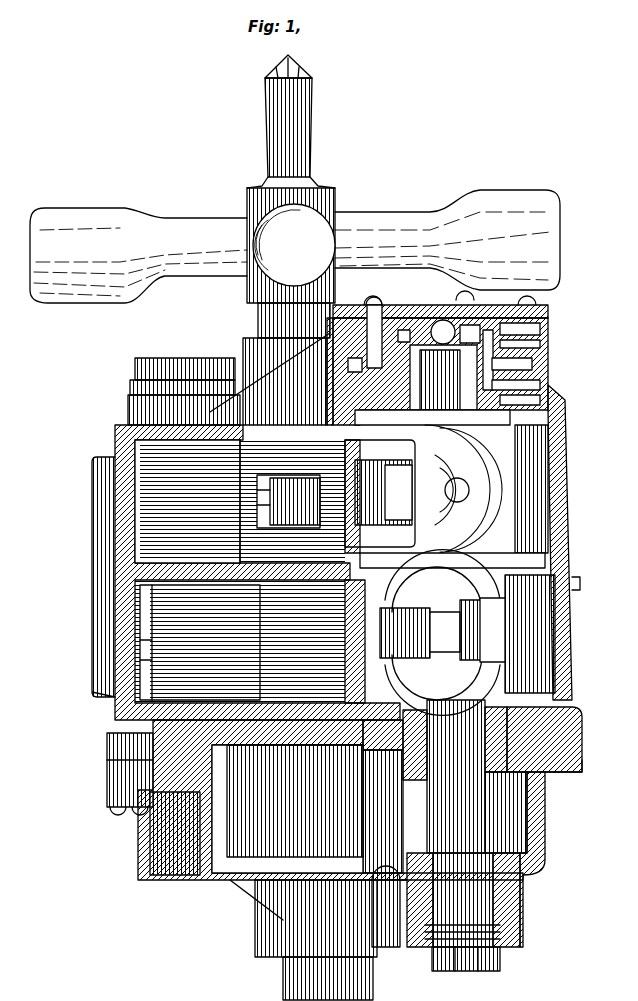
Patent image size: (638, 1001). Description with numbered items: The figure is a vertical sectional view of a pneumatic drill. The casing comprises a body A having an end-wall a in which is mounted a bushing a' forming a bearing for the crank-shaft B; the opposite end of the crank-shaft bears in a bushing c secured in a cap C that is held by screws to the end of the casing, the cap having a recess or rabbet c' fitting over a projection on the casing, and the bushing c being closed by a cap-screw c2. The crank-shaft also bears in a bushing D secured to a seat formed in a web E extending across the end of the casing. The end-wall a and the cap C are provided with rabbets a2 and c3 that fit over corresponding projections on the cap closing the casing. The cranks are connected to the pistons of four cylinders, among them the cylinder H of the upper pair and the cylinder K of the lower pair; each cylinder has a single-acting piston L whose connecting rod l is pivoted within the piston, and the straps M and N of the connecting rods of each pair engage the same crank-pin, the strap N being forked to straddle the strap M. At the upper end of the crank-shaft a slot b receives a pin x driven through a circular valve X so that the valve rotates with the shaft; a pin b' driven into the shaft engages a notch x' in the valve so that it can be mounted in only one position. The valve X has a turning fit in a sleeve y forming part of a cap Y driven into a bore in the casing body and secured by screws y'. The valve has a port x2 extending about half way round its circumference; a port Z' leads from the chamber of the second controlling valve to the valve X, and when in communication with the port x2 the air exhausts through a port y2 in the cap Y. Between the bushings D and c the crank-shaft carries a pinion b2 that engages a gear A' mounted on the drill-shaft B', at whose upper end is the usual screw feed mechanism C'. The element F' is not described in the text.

The screw feed mechanism C' is at (295, 179).
The port x2 is at (304, 335).
The port Z' is at (270, 379).
The cylinder H is at (210, 362).
The casing body A is at (314, 525).
The cap Y is at (550, 306).
The port y2 is at (370, 312).
The circular valve X is at (404, 330).
The slot b is at (439, 313).
The pin x is at (461, 312).
The pin b' is at (491, 339).
The screws y' is at (545, 290).
The notch x' is at (539, 322).
The sleeve y is at (542, 340).
The bushing a' is at (539, 359).
The end-wall a is at (538, 378).
The rabbet a2 is at (546, 395).
The crank-shaft B is at (567, 542).
The strap N is at (378, 455).
The disc F' is at (510, 490).
The strap M is at (372, 500).
The single-acting piston L is at (130, 490).
The connecting rod l is at (262, 520).
The cylinder K is at (160, 668).
The web E is at (405, 675).
The recess or rabbet c' is at (115, 774).
The gear A' is at (330, 820).
The drill-shaft B' is at (333, 933).
The rabbet c3 is at (545, 745).
The bushing D is at (550, 778).
The pinion b2 is at (495, 820).
The cap C is at (545, 859).
The bushing c is at (477, 900).
The cap-screw c2 is at (505, 932).